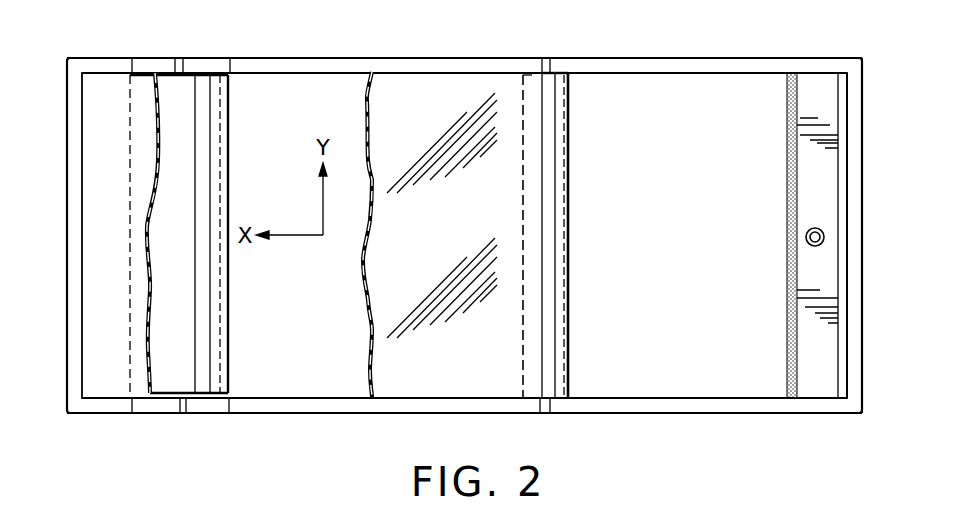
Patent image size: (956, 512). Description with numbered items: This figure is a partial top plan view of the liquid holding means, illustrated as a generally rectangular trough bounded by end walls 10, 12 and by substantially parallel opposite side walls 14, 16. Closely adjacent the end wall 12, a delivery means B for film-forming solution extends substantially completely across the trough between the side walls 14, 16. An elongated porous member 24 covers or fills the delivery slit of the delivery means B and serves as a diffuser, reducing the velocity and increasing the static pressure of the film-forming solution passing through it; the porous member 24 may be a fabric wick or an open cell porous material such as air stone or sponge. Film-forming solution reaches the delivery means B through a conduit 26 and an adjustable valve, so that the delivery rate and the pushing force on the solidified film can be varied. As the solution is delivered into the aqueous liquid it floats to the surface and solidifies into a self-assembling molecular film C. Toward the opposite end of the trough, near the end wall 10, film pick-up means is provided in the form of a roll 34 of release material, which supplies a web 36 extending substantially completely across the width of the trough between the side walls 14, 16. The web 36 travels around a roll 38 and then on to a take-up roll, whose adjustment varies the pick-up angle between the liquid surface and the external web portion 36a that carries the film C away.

The end wall 10 is at (67, 92).
The end wall 12 is at (853, 208).
The side wall 14 is at (675, 65).
The side wall 16 is at (620, 405).
The porous member 24 is at (787, 137).
The conduit 26 is at (806, 237).
The roll 34 is at (140, 380).
The web 36 is at (573, 90).
The external web portion 36a is at (397, 373).
The roll 38 is at (522, 367).
The delivery means B is at (813, 103).
The self-assembling molecular film C is at (687, 353).